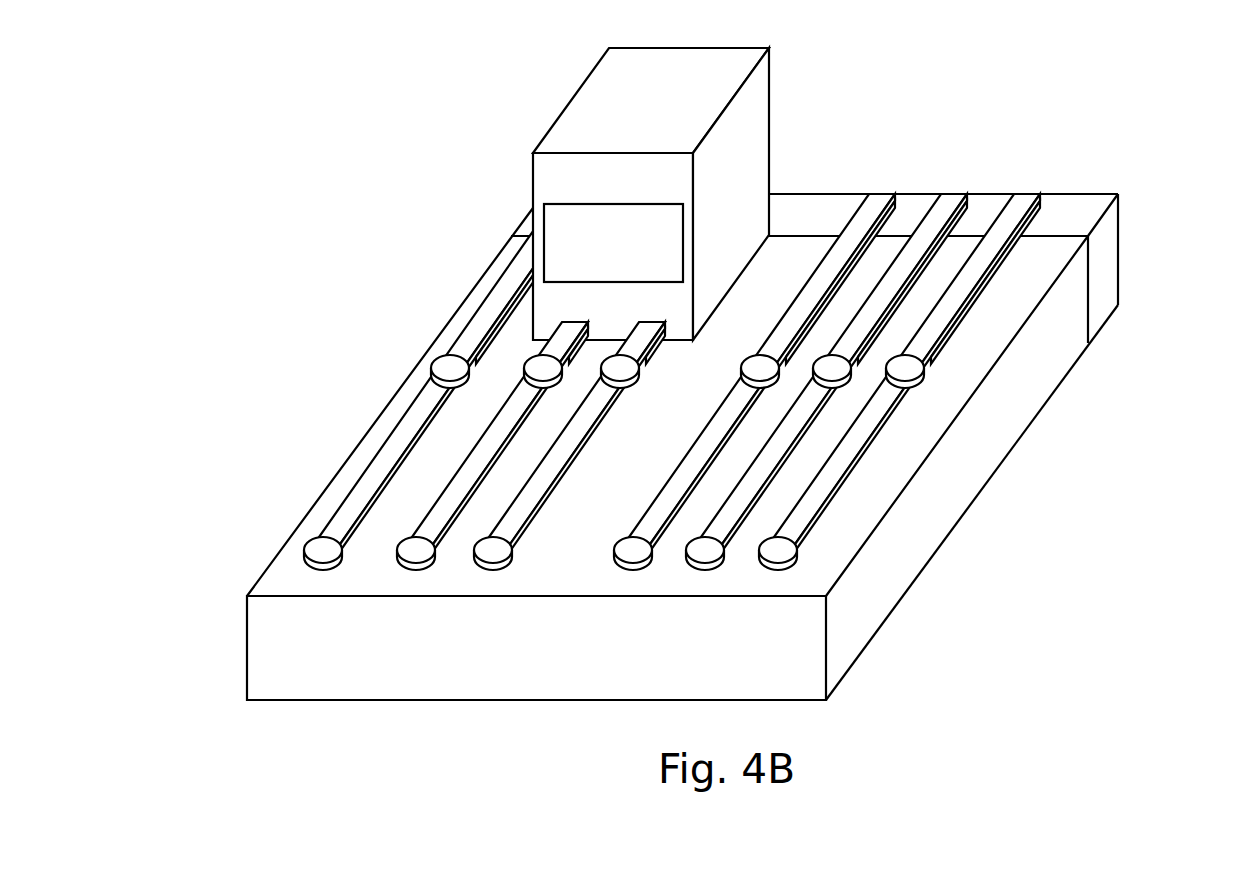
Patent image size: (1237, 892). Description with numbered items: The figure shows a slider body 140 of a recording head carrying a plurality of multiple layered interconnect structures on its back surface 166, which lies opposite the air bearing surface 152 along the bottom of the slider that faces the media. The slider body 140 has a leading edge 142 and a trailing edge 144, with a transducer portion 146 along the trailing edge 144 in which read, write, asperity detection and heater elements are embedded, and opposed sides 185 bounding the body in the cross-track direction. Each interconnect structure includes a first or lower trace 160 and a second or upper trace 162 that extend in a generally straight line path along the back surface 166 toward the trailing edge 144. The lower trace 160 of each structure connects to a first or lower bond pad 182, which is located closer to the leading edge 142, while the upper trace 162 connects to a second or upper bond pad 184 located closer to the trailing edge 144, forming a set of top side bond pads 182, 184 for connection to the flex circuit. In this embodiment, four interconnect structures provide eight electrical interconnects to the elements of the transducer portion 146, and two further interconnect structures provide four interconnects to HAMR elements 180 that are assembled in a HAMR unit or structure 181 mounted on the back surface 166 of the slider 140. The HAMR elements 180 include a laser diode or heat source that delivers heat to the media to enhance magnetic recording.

The slider body 140 is at (693, 451).
The leading edge 142 is at (553, 668).
The trailing edge 144 is at (990, 193).
The transducer portion 146 is at (1105, 258).
The air bearing surface 152 is at (885, 632).
The first or lower trace 160 is at (837, 467).
The second or upper trace 162 is at (931, 236).
The back surface 166 is at (590, 578).
The HAMR elements 180 is at (670, 203).
The HAMR unit or structure 181 is at (702, 87).
The first or lower bond pad 182 is at (327, 557).
The second or upper bond pad 184 is at (617, 373).
The opposed sides 185 is at (940, 512).